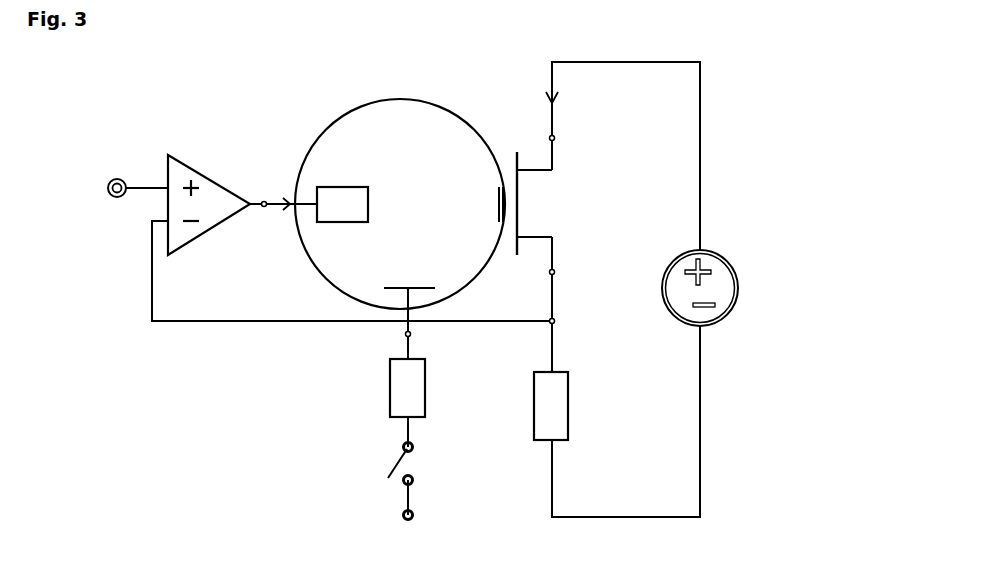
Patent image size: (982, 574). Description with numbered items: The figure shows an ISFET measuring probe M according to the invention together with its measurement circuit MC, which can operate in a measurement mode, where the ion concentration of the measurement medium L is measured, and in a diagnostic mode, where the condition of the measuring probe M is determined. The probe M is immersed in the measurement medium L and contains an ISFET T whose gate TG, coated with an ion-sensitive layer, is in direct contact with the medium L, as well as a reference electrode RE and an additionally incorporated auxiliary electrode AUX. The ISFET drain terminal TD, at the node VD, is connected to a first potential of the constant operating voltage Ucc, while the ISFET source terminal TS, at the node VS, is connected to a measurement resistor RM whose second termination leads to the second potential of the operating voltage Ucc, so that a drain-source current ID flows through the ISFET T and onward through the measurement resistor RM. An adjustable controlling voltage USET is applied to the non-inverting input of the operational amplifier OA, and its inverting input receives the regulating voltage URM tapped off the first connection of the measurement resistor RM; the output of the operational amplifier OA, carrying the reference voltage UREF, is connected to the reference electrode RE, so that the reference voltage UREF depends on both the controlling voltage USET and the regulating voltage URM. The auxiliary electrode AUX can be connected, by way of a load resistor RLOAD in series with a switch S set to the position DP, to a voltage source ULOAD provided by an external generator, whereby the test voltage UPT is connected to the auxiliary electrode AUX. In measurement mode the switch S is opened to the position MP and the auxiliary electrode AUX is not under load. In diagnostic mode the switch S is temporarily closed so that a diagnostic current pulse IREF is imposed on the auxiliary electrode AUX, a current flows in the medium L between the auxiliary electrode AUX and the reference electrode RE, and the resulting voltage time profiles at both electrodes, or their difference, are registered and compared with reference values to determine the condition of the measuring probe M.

The measuring probe M is at (330, 112).
The measurement medium L is at (403, 142).
The reference electrode RE is at (342, 192).
The ISFET gate TG is at (487, 204).
The ISFET T is at (574, 203).
The ISFET drain terminal TD is at (536, 156).
The ISFET source terminal TS is at (535, 254).
The drain node VD is at (568, 138).
The source node VS is at (567, 272).
The drain-source current ID is at (563, 98).
The operational amplifier OA is at (209, 208).
The controlling voltage USET is at (94, 189).
The reference voltage UREF is at (265, 187).
The diagnostic current pulse IREF is at (263, 222).
The auxiliary electrode AUX is at (409, 276).
The test voltage UPT is at (387, 339).
The regulating voltage URM is at (574, 322).
The load resistor RLOAD is at (437, 388).
The measurement resistor RM is at (571, 406).
The switch S is at (417, 448).
The measurement position MP is at (385, 463).
The diagnostic position DP is at (425, 481).
The voltage source ULOAD is at (425, 534).
The operating voltage Ucc is at (723, 288).
The measurement circuit MC is at (723, 114).